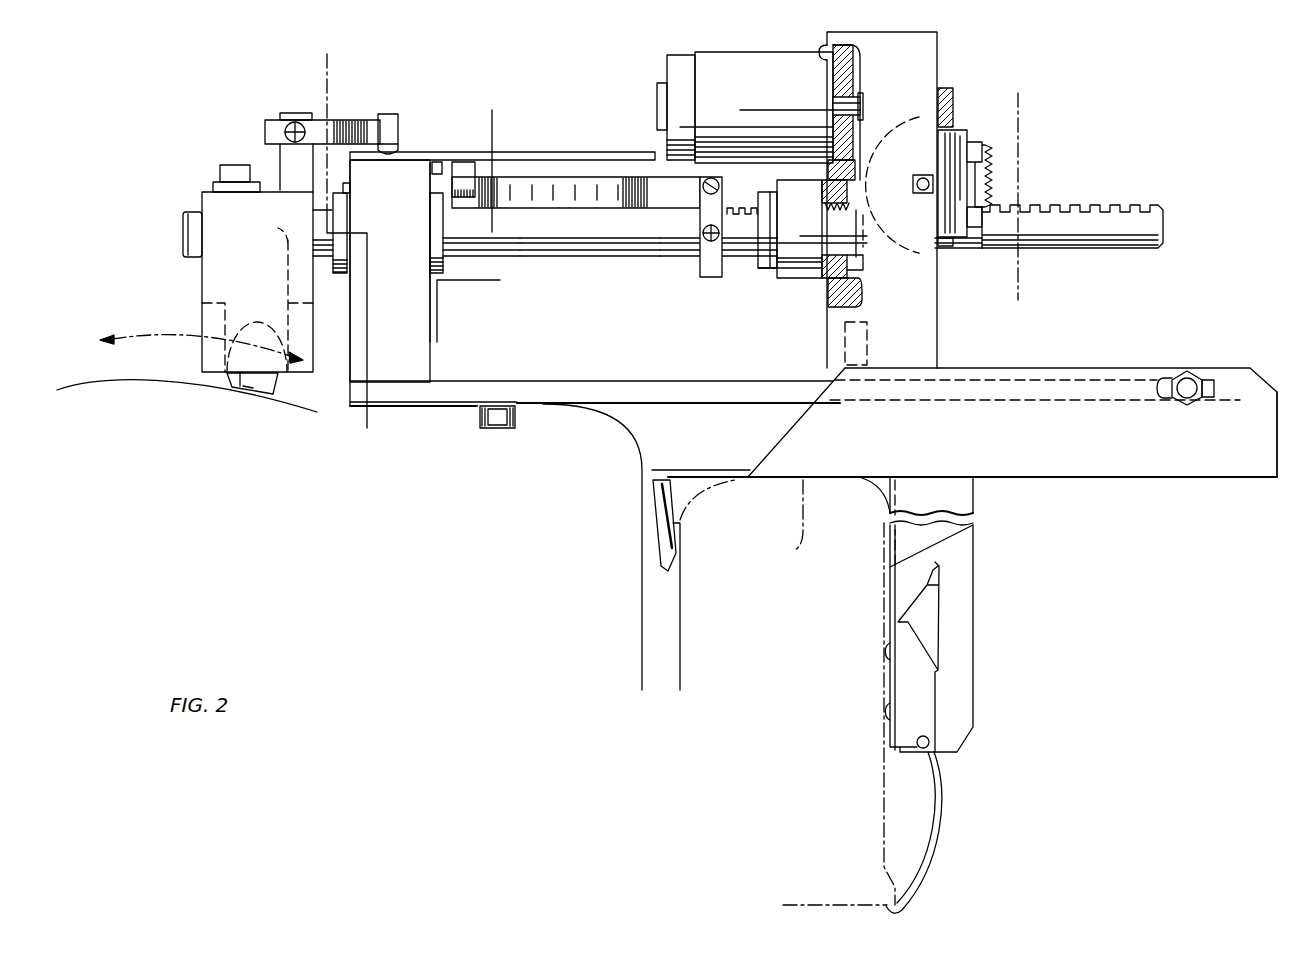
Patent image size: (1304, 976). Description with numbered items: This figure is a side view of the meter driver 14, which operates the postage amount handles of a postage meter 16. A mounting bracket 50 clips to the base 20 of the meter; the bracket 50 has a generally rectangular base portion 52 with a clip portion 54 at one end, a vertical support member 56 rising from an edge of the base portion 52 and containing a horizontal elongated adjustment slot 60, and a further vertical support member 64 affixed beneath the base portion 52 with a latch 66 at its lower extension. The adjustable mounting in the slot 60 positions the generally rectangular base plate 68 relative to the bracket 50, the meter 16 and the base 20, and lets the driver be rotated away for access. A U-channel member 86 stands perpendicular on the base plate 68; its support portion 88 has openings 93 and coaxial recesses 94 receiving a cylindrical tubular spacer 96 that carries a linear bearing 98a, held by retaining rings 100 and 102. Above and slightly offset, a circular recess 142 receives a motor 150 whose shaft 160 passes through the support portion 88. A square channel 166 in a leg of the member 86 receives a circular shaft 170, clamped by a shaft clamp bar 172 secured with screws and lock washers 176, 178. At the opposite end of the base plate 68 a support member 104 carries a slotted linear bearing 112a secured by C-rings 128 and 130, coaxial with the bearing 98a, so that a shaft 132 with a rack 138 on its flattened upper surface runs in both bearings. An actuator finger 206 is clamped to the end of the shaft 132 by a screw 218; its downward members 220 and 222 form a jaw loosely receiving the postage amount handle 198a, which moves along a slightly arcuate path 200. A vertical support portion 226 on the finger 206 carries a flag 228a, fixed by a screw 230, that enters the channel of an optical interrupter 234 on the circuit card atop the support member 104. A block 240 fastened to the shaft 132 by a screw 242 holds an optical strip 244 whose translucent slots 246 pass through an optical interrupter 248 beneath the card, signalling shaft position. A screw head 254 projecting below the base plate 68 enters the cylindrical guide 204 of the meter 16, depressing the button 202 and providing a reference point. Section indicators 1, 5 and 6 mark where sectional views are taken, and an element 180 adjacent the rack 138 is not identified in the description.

The section line 1- 1 is at (493, 110).
The section line 5- 5 is at (327, 54).
The section line 6- 6 is at (1020, 92).
The meter driver 14 is at (752, 50).
The postage meter 16 is at (630, 440).
The base 20 is at (836, 834).
The mounting bracket 50 is at (1078, 476).
The base portion 52 is at (748, 470).
The clip portion 54 is at (686, 525).
The vertical support member 56 is at (1277, 478).
The adjustment slot 60 is at (1206, 380).
The vertical support member 64 is at (975, 582).
The latch 66 is at (938, 643).
The base plate 68 is at (657, 406).
The U-channel member 86 is at (938, 353).
The support portion 88 is at (846, 76).
The openings 93 is at (850, 263).
The recesses 94 is at (810, 282).
The cylindrical tubular spacer 96 is at (790, 282).
The linear bearing 98a is at (760, 248).
The retaining ring 100 is at (858, 296).
The retaining ring 102 is at (770, 272).
The support member 104 is at (435, 367).
The slotted linear bearing 112a is at (340, 223).
The C-ring 128 is at (432, 180).
The C-ring 130 is at (350, 178).
The shaft 132 is at (590, 260).
The rack 138 is at (1080, 205).
The circular recess 142 is at (824, 45).
The motor 150 is at (695, 55).
The motor shaft 160 is at (857, 100).
The square channel 166 is at (866, 215).
The circular shaft 170 is at (921, 176).
The shaft clamp bar 172 is at (950, 125).
The screws and lock washers 176 is at (986, 160).
The screws and lock washers 178 is at (976, 140).
The rack engagement 180 is at (991, 208).
The postage amount handle 198a is at (247, 382).
The arcuate path 200 is at (163, 343).
The button 202 is at (480, 426).
The cylindrical guide 204 is at (478, 412).
The actuator finger 206 is at (186, 275).
The screw 218 is at (220, 176).
The member 220 is at (257, 282).
The member 222 is at (257, 300).
The vertical support portion 226 is at (298, 113).
The flag 228a is at (352, 120).
The screw 230 is at (284, 126).
The optical interrupter 234 is at (400, 115).
The block 240 is at (712, 262).
The screw 242 is at (705, 246).
The optical strip 244 is at (583, 210).
The translucent slots 246 is at (650, 192).
The optical interrupter 248 is at (462, 165).
The screw head 254 is at (500, 400).